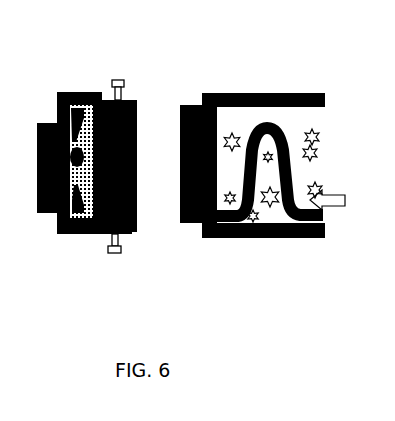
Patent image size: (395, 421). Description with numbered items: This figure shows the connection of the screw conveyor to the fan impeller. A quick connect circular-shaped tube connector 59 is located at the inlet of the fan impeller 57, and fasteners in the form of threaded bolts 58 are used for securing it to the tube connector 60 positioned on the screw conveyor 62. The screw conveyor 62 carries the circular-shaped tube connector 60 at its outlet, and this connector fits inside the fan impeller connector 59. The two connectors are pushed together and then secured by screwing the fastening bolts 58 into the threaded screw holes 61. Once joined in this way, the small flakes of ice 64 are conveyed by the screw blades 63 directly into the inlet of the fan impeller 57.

The fan impeller 57 is at (73, 237).
The threaded bolts 58 is at (114, 253).
The tube connector 59 is at (134, 232).
The tube connector 60 is at (178, 105).
The threaded screw holes 61 is at (196, 108).
The screw conveyor 62 is at (228, 123).
The screw blades 63 is at (287, 210).
The small flakes of ice 64 is at (255, 225).